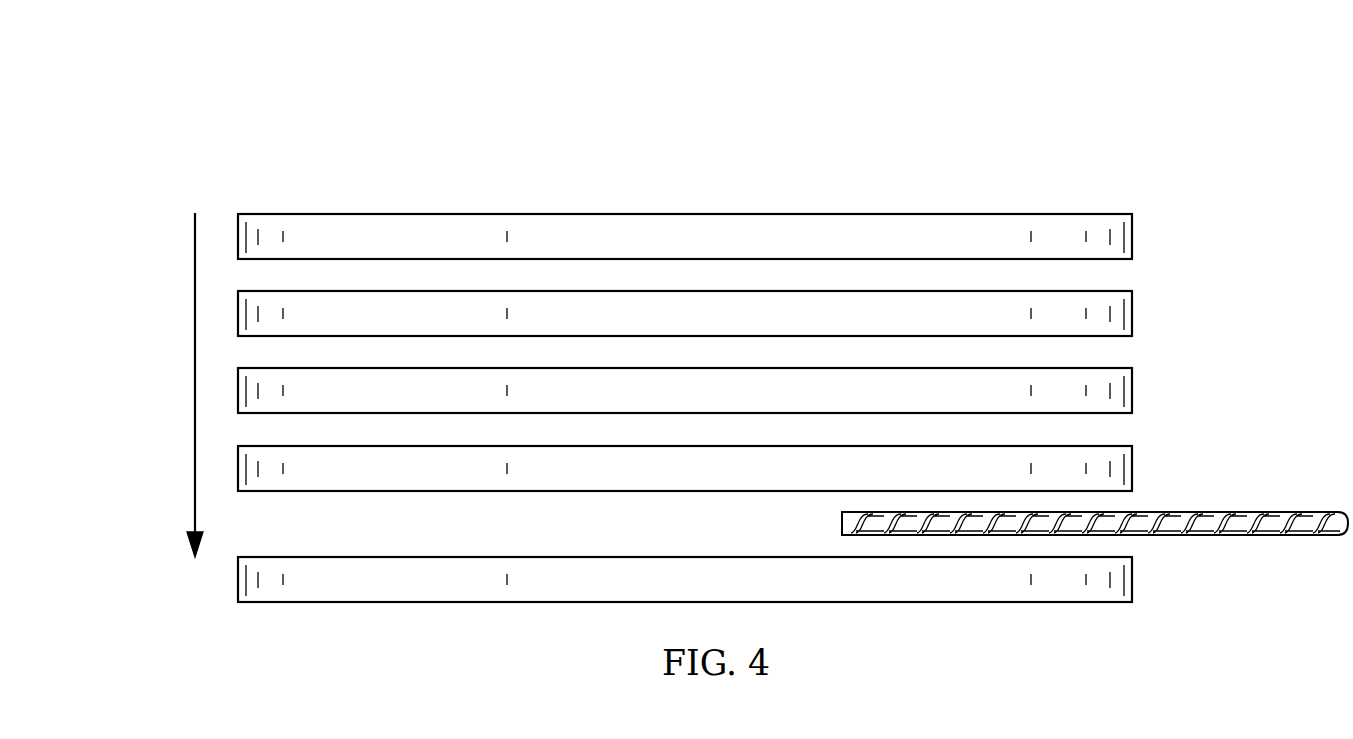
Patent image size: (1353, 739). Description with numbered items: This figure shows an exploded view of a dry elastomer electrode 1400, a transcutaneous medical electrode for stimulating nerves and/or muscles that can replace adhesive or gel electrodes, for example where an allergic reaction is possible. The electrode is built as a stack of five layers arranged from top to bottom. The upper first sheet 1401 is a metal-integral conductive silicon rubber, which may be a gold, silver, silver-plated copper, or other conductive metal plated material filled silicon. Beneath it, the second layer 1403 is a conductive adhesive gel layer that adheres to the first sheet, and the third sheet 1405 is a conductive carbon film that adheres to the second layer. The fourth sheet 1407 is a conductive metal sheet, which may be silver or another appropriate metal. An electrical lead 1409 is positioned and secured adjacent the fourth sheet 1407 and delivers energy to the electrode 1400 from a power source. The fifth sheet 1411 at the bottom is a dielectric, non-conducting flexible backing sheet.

The electrode 1400 is at (234, 120).
The first sheet 1401 is at (1132, 238).
The second layer 1403 is at (1132, 315).
The third sheet 1405 is at (1132, 392).
The fourth sheet 1407 is at (1132, 468).
The electrical lead 1409 is at (1300, 537).
The fifth sheet 1411 is at (1132, 580).